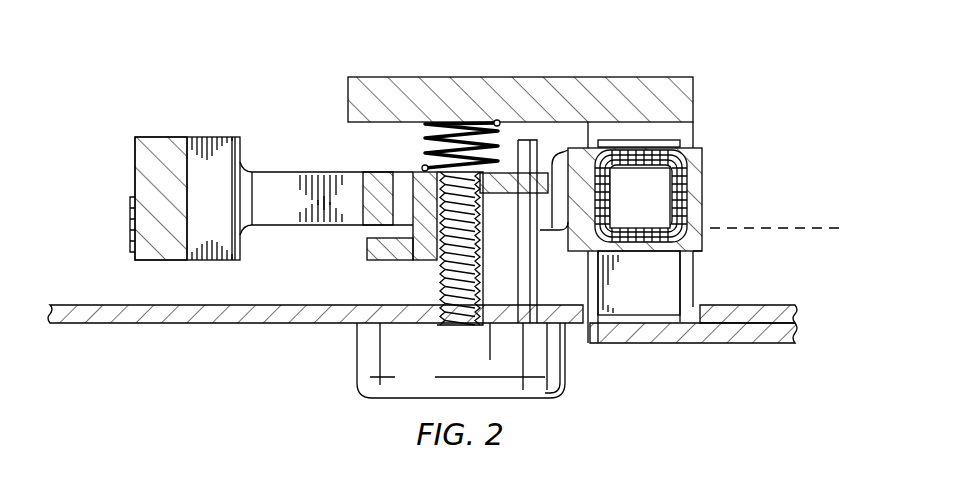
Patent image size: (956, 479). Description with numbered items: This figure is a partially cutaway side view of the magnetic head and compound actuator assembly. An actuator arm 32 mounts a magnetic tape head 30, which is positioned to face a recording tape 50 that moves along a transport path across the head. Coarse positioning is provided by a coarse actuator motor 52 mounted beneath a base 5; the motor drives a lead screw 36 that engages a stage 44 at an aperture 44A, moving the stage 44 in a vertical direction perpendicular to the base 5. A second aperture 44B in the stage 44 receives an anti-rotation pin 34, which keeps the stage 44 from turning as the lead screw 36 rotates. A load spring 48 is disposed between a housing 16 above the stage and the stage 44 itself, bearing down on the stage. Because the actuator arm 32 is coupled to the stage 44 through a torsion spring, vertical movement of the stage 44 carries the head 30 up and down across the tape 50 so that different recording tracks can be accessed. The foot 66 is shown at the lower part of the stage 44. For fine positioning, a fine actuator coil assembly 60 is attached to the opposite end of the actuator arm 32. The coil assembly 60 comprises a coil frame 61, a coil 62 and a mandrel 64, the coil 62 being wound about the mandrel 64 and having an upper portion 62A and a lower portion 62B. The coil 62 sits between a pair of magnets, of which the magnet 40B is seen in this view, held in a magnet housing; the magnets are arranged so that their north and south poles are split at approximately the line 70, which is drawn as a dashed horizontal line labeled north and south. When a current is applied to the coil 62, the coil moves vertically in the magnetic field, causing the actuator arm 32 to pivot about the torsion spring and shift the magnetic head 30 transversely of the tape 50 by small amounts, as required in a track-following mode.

The base 5 is at (110, 325).
The housing 16 is at (383, 77).
The magnetic tape head 30 is at (213, 137).
The actuator arm 32 is at (296, 167).
The anti-rotation pin 34 is at (515, 145).
The lead screw 36 is at (438, 277).
The magnet 40B is at (643, 140).
The stage 44 is at (448, 204).
The aperture 44A is at (492, 185).
The aperture 44B is at (540, 170).
The load spring 48 is at (420, 142).
The recording tape 50 is at (130, 232).
The coarse actuator motor 52 is at (357, 356).
The fine actuator coil assembly 60 is at (703, 199).
The coil frame 61 is at (703, 245).
The coil 62 is at (700, 173).
The upper portion 62A is at (660, 157).
The lower portion 62B is at (647, 251).
The mandrel 64 is at (628, 208).
The bracket foot 66 is at (367, 252).
The line 70 is at (818, 228).